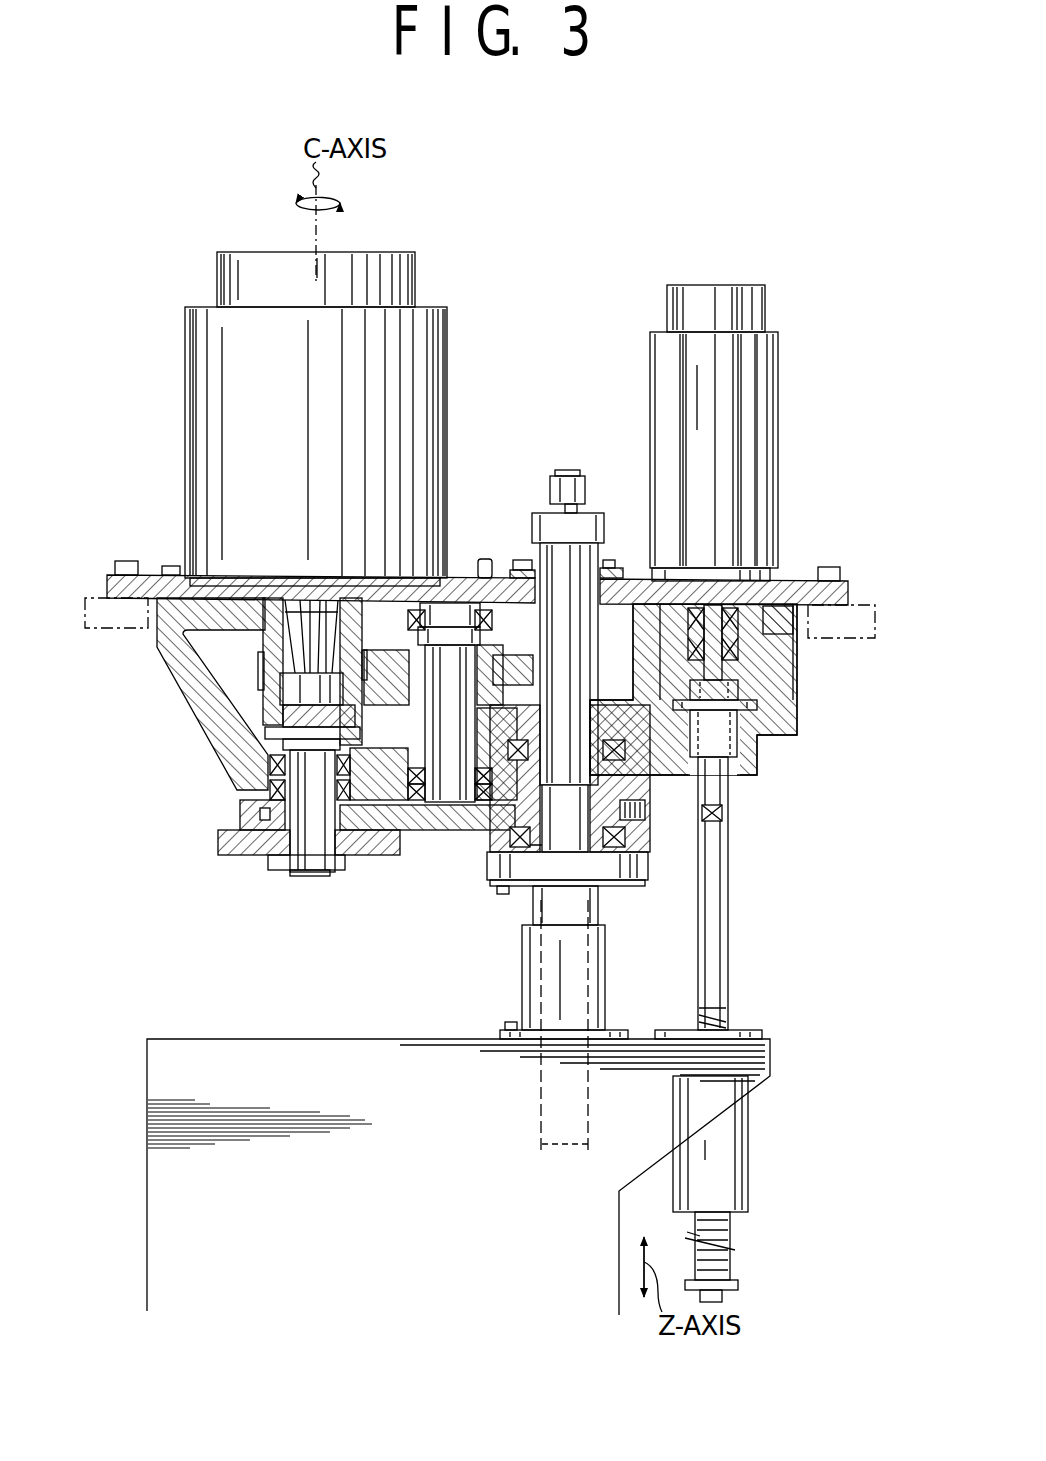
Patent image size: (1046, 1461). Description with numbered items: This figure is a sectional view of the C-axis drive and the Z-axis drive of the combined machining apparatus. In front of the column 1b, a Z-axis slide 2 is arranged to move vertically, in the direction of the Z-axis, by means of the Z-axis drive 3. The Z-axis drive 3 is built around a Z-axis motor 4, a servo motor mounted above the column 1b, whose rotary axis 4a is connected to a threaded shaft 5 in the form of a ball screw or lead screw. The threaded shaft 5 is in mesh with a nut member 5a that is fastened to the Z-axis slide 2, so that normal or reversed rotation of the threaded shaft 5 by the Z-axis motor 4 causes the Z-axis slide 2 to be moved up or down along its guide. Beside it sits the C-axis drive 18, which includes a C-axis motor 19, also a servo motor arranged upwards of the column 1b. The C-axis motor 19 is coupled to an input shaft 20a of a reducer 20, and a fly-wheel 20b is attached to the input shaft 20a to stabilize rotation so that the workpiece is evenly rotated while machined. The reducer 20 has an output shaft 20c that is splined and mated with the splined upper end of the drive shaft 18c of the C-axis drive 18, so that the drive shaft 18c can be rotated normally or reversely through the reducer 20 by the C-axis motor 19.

The column 1b is at (848, 624).
The Z-axis slide 2 is at (344, 1066).
The Z-axis drive 3 is at (785, 492).
The Z-axis motor 4 is at (767, 365).
The rotary axis 4a is at (705, 615).
The threaded shaft 5 is at (718, 993).
The nut member 5a is at (722, 1195).
The C-axis drive 18 is at (505, 908).
The drive shaft 18c is at (545, 553).
The C-axis motor 19 is at (433, 350).
The reducer 20 is at (250, 698).
The input shaft 20a is at (298, 772).
The fly-wheel 20b is at (241, 848).
The output shaft 20c is at (505, 822).